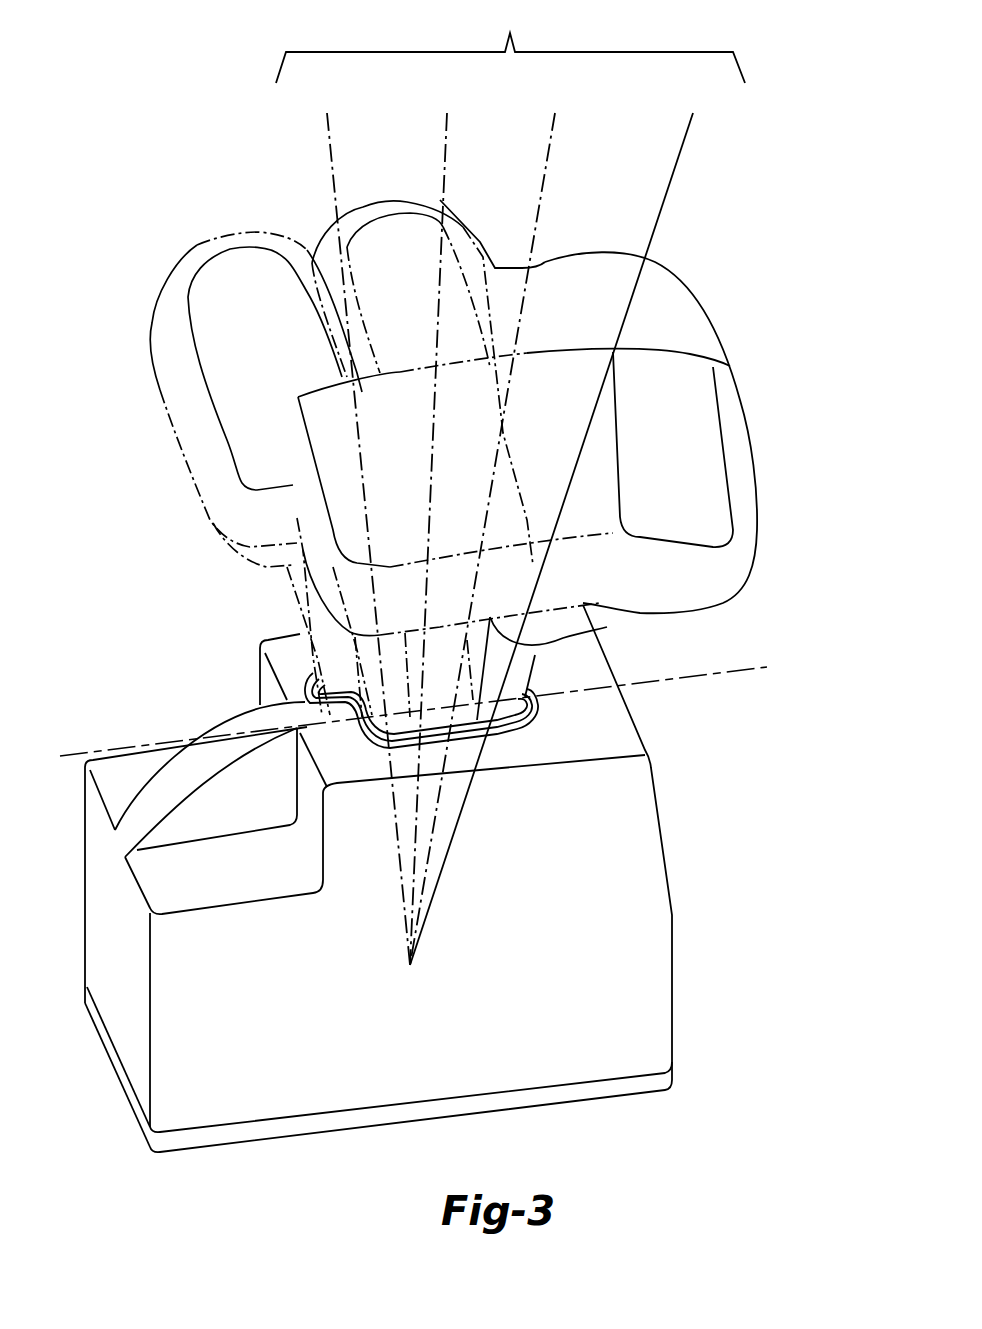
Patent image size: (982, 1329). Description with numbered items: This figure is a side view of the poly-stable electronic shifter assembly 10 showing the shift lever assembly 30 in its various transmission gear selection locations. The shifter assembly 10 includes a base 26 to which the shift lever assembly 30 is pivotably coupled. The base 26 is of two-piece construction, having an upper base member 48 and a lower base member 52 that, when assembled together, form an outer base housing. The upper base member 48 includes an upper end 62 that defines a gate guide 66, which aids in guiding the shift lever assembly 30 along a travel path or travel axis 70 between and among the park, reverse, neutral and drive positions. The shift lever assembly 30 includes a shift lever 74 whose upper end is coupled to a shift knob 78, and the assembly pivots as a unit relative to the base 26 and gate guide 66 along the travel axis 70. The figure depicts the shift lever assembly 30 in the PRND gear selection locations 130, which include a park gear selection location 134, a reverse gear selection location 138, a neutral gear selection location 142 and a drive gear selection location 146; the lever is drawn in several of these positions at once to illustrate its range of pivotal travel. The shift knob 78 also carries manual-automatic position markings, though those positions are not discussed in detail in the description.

The poly-stable electronic shifter assembly 10 is at (720, 215).
The base 26 is at (440, 878).
The shift lever assembly 30 is at (715, 318).
The upper base member 48 is at (625, 1010).
The lower base member 52 is at (632, 1089).
The upper end 62 is at (517, 748).
The gate guide 66 is at (530, 720).
The travel axis 70 is at (127, 748).
The shift lever 74 is at (530, 661).
The shift knob 78 is at (742, 473).
The PRND gear selection locations 130 is at (510, 61).
The park (P) gear selection location 134 is at (680, 195).
The reverse (R) gear selection location 138 is at (545, 180).
The neutral (N) gear selection location 142 is at (445, 162).
The drive (D) gear selection location 146 is at (333, 180).